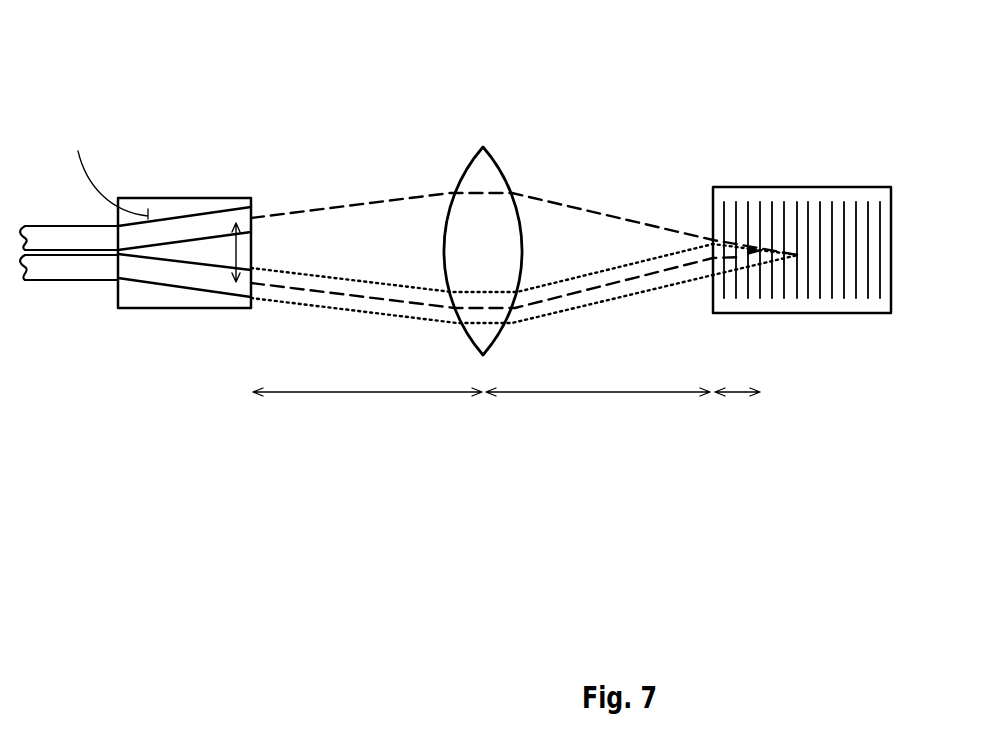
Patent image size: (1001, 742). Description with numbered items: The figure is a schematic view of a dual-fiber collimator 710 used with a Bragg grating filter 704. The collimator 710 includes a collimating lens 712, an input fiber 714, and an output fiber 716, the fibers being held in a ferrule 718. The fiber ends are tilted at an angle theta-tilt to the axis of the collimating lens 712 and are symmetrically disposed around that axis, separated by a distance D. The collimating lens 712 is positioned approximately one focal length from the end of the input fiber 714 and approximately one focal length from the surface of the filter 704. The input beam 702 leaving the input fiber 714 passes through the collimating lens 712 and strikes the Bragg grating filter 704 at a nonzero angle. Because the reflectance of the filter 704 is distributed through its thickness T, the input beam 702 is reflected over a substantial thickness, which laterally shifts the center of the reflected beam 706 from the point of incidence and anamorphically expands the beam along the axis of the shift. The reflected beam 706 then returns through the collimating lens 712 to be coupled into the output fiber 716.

The collimator 710 is at (270, 88).
The input fiber 714 is at (52, 226).
The output fiber 716 is at (53, 281).
The ferrule 718 is at (140, 309).
The collimating lens 712 is at (473, 163).
The input beam 702 is at (593, 213).
The reflected beam 706 is at (563, 296).
The Bragg grating filter 704 is at (750, 187).